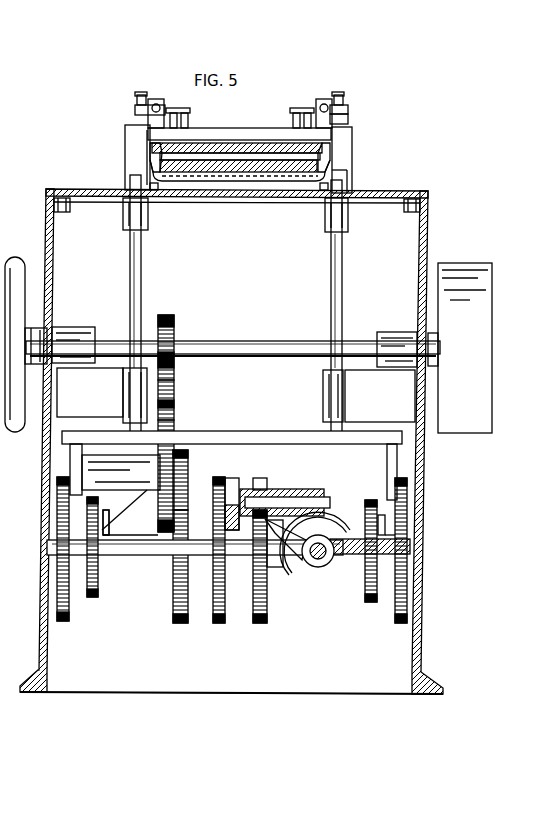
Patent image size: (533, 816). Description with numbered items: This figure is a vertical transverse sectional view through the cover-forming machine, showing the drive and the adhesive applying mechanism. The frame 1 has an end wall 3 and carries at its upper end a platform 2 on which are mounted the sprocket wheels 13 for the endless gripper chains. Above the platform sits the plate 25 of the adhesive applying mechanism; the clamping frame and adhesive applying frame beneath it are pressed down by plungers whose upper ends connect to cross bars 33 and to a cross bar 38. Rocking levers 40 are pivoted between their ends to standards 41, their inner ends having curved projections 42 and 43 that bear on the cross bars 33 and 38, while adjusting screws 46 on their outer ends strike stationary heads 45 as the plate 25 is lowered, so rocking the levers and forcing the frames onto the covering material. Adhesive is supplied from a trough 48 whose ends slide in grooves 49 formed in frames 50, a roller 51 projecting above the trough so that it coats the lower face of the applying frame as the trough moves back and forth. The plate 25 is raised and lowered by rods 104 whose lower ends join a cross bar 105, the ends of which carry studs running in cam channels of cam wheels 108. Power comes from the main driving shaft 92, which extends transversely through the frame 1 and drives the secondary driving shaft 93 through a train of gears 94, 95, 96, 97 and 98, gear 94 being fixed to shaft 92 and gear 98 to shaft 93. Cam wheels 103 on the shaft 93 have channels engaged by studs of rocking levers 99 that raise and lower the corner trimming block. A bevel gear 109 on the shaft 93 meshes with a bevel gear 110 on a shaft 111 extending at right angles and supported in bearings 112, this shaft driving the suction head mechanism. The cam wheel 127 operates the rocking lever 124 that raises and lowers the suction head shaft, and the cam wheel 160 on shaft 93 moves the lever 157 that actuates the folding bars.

The frame 1 is at (46, 240).
The platform 2 is at (104, 191).
The end wall 3 is at (225, 692).
The sprocket wheels 13 is at (150, 212).
The plate 25 is at (228, 140).
The cross bars 33 is at (186, 114).
The cross bar 38 is at (160, 104).
The rocking levers 40 is at (348, 108).
The standards 41 is at (348, 120).
The curved projection 42 is at (294, 112).
The curved projection 43 is at (306, 113).
The stationary heads 45 is at (352, 149).
The adjusting screws 46 is at (340, 94).
The trough 48 is at (247, 180).
The grooves 49 is at (150, 166).
The frames 50 is at (345, 181).
The roller 51 is at (215, 180).
The main driving shaft 92 is at (265, 344).
The secondary driving shaft 93 is at (139, 556).
The gear 94 is at (174, 326).
The gear 95 is at (175, 398).
The gear 96 is at (175, 424).
The gear 97 is at (189, 461).
The gear 98 is at (173, 591).
The rocking levers 99 is at (110, 530).
The cam wheels 103 is at (94, 599).
The rods 104 is at (130, 291).
The cross bar 105 is at (272, 437).
The cam wheels 108 is at (63, 622).
The bevel gear 109 is at (286, 575).
The bevel gear 110 is at (326, 585).
The shaft 111 is at (320, 546).
The bearings 112 is at (352, 560).
The rocking lever 124 is at (246, 485).
The cam wheel 127 is at (219, 626).
The lever 157 is at (263, 481).
The cam wheel 160 is at (262, 626).